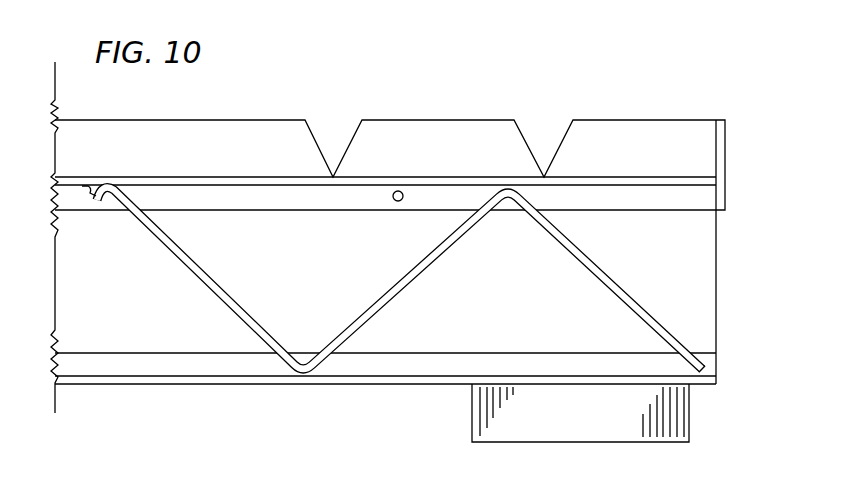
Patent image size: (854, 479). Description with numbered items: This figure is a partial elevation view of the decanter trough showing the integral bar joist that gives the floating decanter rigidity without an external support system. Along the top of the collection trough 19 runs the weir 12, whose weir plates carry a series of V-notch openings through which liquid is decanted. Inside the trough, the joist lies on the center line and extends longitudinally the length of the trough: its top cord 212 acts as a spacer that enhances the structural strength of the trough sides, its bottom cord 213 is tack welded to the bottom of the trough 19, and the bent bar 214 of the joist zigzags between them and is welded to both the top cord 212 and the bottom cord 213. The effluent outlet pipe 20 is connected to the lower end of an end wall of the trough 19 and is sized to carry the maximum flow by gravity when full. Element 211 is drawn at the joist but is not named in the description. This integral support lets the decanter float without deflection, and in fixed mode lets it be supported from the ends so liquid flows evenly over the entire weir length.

The weir 12 is at (186, 119).
The collection trough 19 is at (716, 287).
The effluent outlet pipe 20 is at (586, 428).
The fastener 211 is at (400, 190).
The top cord of bar joist 212 is at (360, 205).
The bottom cord of bar joist 213 is at (458, 367).
The bent bar of joist 214 is at (560, 243).